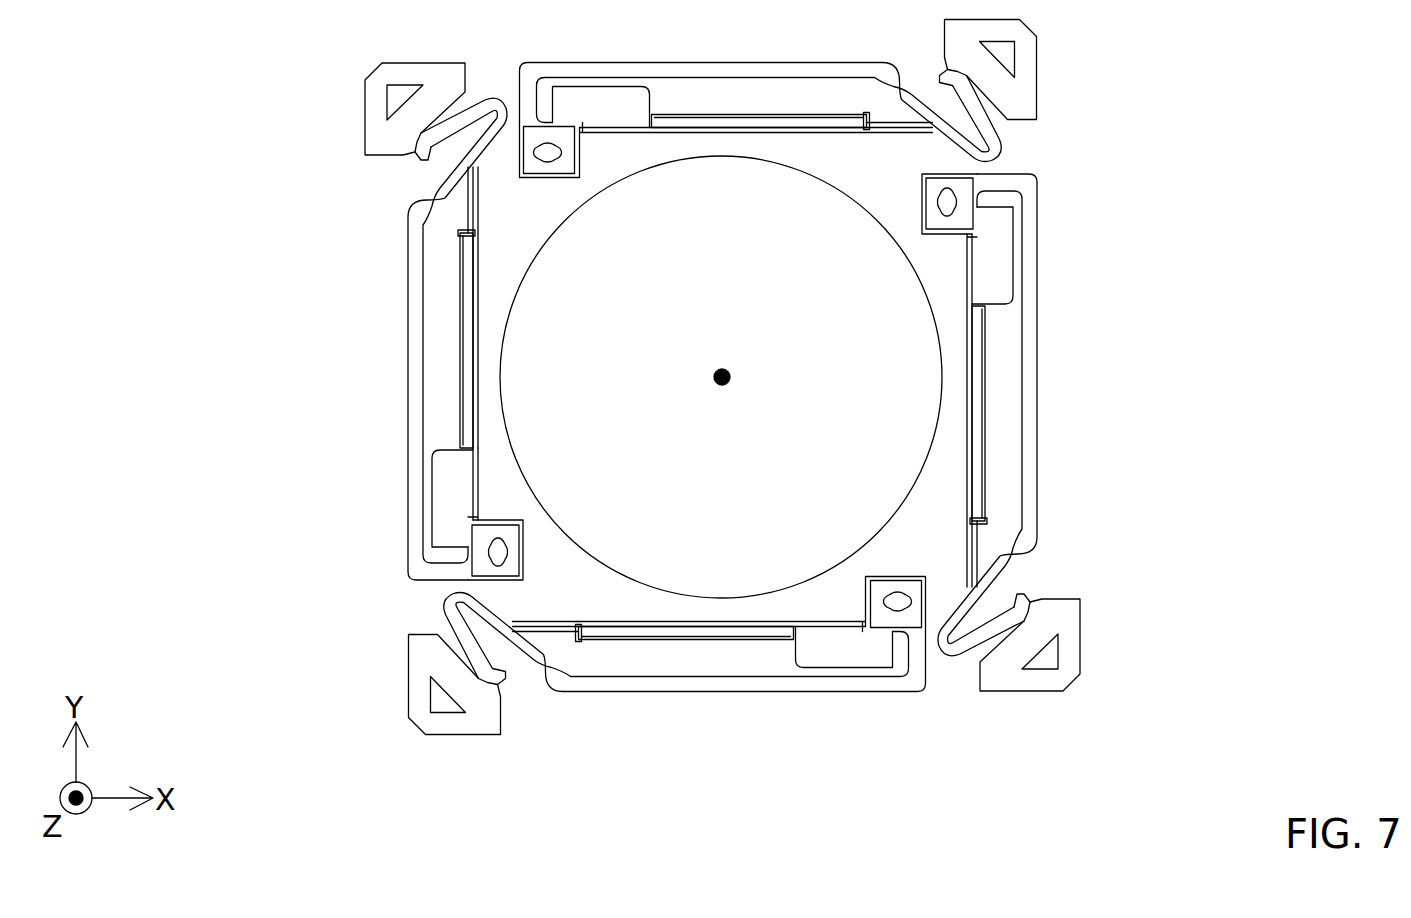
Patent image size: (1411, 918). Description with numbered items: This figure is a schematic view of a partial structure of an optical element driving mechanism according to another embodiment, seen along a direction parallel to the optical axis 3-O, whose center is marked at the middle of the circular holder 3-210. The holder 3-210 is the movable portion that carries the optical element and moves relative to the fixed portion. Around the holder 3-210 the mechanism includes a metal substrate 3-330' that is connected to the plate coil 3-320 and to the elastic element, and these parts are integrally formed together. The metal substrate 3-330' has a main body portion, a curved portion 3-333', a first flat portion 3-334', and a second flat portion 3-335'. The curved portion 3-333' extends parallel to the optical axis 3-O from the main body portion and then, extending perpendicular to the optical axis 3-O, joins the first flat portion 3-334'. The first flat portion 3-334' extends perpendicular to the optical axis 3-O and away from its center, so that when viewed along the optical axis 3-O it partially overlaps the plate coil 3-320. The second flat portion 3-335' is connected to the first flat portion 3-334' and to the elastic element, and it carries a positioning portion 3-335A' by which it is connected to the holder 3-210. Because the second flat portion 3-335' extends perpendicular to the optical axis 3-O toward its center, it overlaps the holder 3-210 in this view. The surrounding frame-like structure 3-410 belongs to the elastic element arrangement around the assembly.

The plate coil 3-320 is at (467, 298).
The metal substrate 3-330' is at (358, 307).
The first flat portion 3-334' is at (356, 498).
The curved portion 3-333' is at (358, 484).
The frame 3-410 is at (415, 542).
The positioning portion 3-335A' is at (361, 569).
The second flat portion 3-335' is at (520, 665).
The holder 3-210 is at (827, 608).
The optical axis 3-O is at (746, 393).